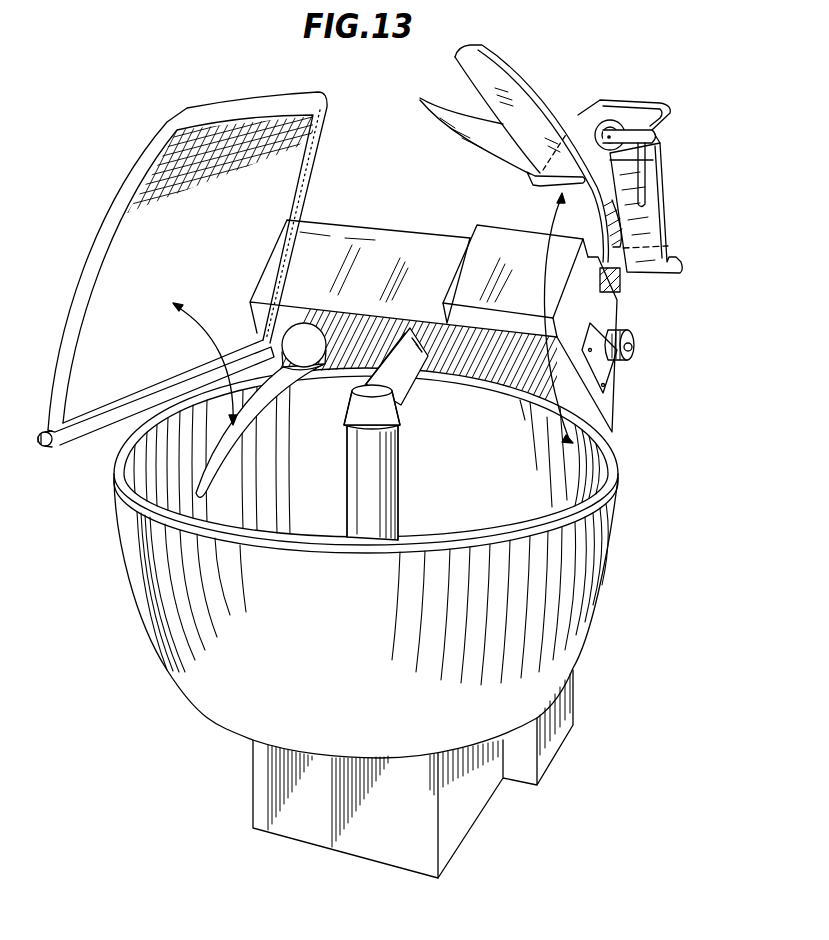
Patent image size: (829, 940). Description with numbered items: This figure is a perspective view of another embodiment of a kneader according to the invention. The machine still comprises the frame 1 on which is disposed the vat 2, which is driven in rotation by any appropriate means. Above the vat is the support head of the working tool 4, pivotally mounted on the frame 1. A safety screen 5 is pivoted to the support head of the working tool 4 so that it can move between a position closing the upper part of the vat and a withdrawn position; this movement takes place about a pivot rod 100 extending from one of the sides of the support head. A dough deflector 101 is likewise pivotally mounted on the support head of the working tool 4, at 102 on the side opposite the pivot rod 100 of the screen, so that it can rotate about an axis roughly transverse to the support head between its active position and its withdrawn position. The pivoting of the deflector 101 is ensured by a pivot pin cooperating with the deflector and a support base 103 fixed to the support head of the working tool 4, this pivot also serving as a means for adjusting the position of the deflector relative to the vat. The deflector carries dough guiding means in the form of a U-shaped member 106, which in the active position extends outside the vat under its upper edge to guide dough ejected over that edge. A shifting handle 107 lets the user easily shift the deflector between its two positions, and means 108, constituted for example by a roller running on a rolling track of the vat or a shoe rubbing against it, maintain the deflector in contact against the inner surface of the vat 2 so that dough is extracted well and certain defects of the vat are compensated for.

The frame 1 is at (562, 715).
The vat 2 is at (553, 622).
The support head of the working tool 4 is at (367, 255).
The safety screen 5 is at (160, 157).
The pivot rod 100 is at (44, 447).
The dough deflector 101 is at (520, 118).
The pivot of the deflector 102 is at (642, 338).
The support base 103 is at (603, 373).
The U-shaped member 106 is at (643, 225).
The shifting handle 107 is at (643, 100).
The means for maintaining the deflector in contact against the vat 108 is at (632, 120).